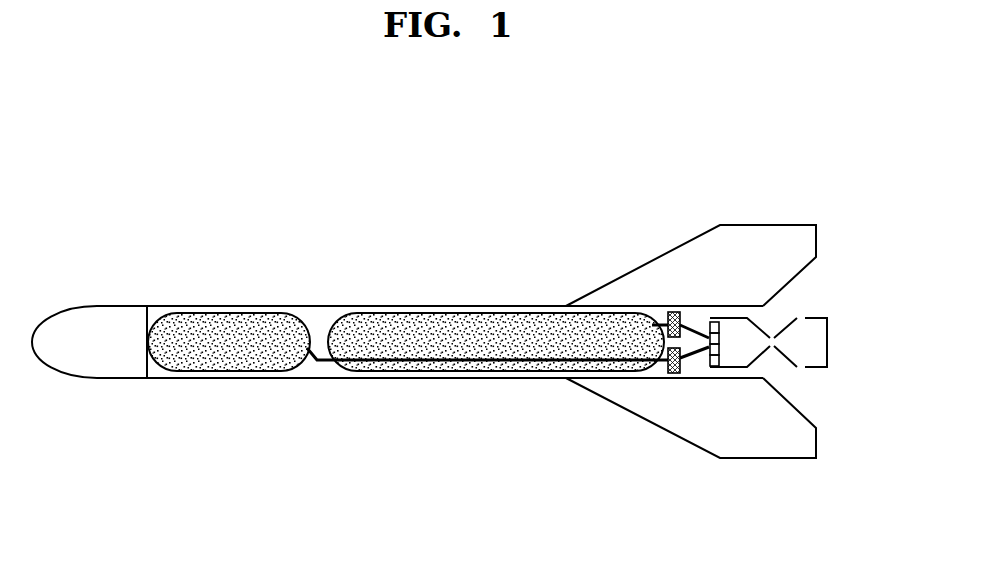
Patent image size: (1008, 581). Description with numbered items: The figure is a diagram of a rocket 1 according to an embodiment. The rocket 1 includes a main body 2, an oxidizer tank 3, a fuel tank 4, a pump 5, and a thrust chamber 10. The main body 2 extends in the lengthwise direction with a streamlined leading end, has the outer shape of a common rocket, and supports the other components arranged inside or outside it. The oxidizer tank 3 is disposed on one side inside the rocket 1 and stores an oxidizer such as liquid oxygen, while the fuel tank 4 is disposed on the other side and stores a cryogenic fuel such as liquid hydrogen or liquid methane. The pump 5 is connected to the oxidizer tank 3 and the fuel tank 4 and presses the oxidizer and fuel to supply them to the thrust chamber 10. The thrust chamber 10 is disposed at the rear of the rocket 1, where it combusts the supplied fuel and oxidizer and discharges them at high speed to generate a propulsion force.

The rocket 1 is at (119, 178).
The main body 2 is at (324, 306).
The oxidizer tank 3 is at (229, 320).
The fuel tank 4 is at (422, 320).
The pump 5 is at (668, 333).
The thrust chamber 10 is at (838, 295).